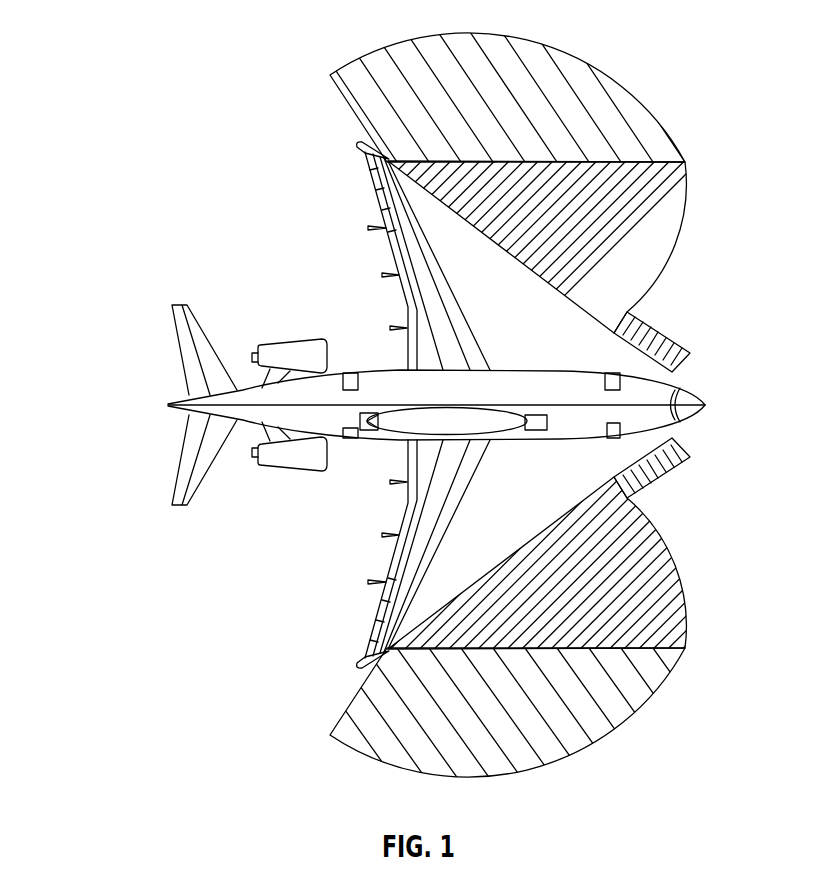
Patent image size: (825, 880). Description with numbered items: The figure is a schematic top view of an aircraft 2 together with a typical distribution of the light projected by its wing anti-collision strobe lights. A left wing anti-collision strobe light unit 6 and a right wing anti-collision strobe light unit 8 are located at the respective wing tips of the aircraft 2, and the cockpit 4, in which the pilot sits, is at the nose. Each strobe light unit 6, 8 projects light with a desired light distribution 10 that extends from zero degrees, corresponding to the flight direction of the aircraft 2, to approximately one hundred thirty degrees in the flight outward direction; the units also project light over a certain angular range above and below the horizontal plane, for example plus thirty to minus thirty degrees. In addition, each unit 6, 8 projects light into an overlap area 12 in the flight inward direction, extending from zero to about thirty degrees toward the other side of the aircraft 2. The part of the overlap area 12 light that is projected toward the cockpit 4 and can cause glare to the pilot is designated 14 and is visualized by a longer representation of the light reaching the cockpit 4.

The aircraft 2 is at (104, 263).
The cockpit 4 is at (703, 394).
The left wing anti-collision strobe light unit 6 is at (372, 150).
The right wing anti-collision strobe light unit 8 is at (371, 661).
The light distribution 10 is at (530, 38).
The overlap area 12 is at (683, 226).
The light projected into the direction of the cockpit 14 is at (691, 354).